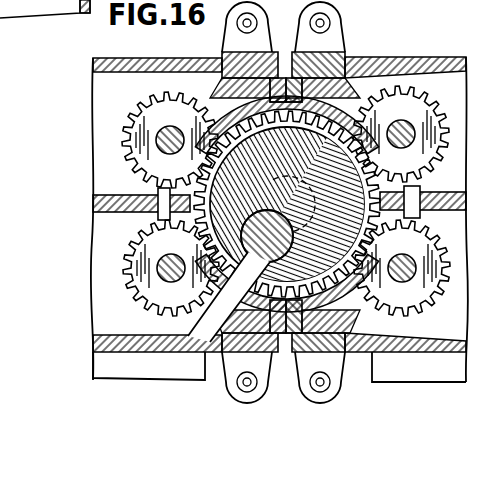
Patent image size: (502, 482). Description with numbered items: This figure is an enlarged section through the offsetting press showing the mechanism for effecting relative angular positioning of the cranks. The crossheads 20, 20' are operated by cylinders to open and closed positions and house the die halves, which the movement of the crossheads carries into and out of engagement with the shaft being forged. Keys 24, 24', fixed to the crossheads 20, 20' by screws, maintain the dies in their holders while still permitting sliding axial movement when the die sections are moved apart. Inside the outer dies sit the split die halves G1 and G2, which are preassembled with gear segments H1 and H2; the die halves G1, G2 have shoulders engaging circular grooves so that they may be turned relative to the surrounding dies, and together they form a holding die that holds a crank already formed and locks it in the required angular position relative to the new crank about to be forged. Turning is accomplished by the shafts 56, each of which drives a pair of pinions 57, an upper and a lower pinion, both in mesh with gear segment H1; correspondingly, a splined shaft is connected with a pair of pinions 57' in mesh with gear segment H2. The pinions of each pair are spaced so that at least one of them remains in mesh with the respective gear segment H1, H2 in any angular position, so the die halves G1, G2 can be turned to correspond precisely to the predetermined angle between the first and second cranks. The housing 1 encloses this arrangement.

The housing 1 is at (180, 340).
The crosshead 20 is at (149, 388).
The crosshead 20' is at (419, 385).
The key 24 is at (248, 68).
The key 24' is at (290, 94).
The shaft 56 is at (166, 142).
The pinion 57 is at (256, 201).
The pinion 57' is at (427, 268).
The split die half G1 is at (222, 168).
The split die half G2 is at (358, 350).
The gear segment H1 is at (272, 228).
The gear segment H2 is at (225, 350).